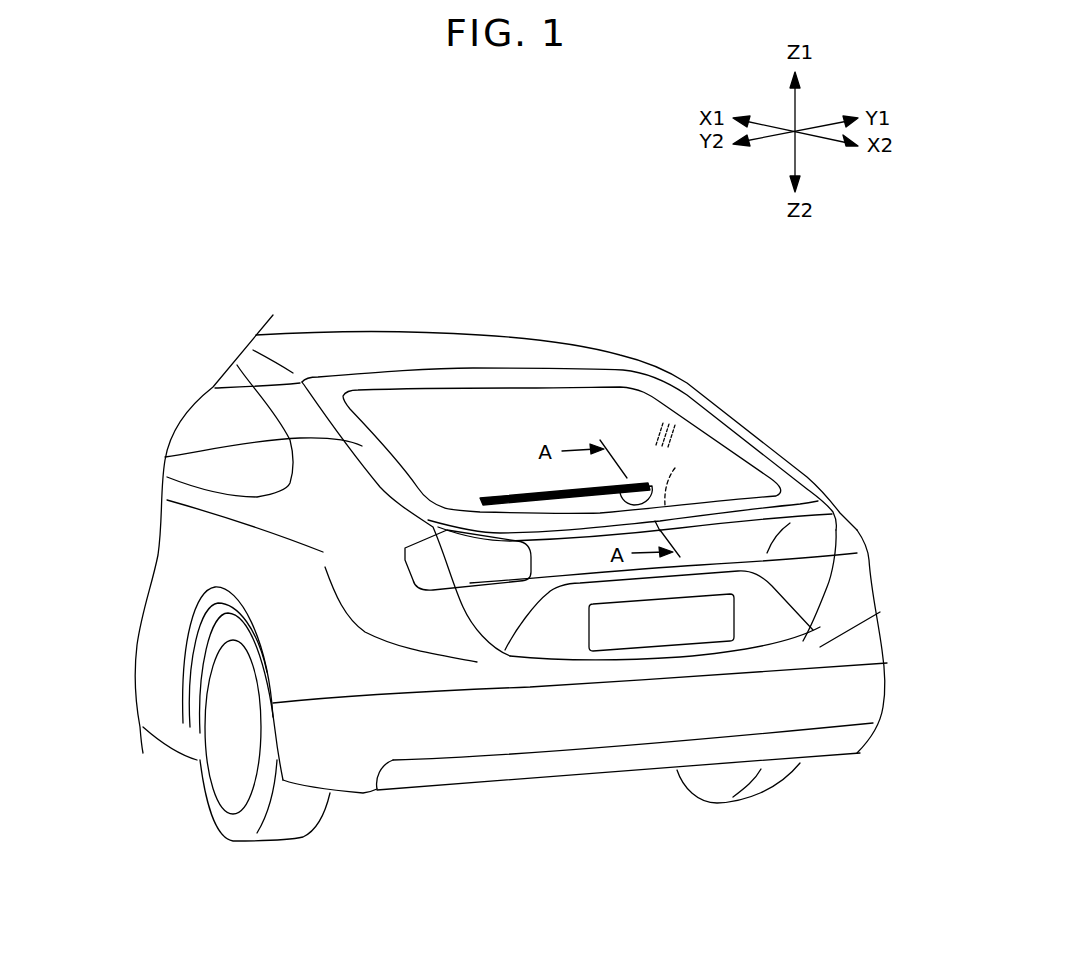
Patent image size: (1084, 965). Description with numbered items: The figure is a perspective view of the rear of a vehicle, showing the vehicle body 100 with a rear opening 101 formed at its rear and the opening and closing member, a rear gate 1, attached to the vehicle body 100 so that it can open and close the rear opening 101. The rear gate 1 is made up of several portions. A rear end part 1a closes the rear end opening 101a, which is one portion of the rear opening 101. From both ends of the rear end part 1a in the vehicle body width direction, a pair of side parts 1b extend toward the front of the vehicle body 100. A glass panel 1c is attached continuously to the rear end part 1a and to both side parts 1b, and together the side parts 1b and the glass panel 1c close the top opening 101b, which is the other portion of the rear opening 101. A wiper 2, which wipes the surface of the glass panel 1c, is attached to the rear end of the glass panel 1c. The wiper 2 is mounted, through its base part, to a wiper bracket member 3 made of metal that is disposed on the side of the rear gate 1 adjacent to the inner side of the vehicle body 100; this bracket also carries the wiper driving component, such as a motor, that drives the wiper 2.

The rear gate 1 is at (613, 372).
The rear end part 1a is at (820, 571).
The side parts 1b is at (165, 456).
The glass panel 1c is at (500, 405).
The wiper 2 is at (643, 481).
The wiper bracket member 3 is at (675, 468).
The vehicle body 100 is at (183, 550).
The rear opening 101 is at (377, 370).
The rear end opening 101a is at (827, 587).
The top opening 101b is at (212, 390).